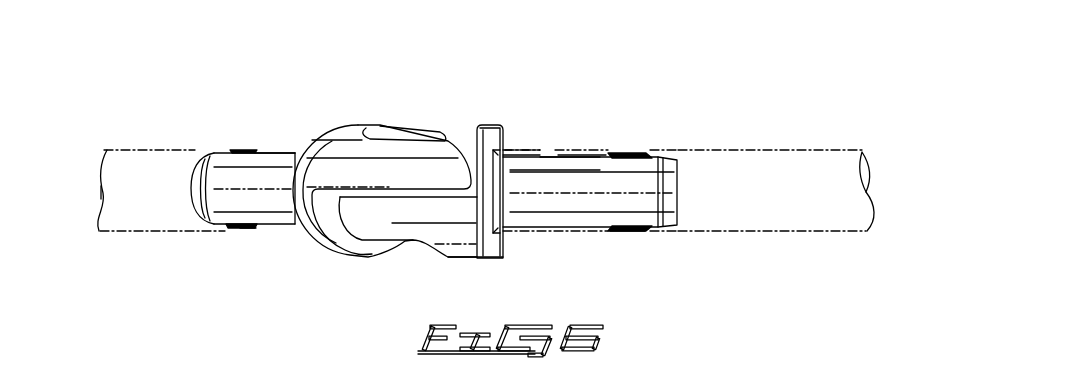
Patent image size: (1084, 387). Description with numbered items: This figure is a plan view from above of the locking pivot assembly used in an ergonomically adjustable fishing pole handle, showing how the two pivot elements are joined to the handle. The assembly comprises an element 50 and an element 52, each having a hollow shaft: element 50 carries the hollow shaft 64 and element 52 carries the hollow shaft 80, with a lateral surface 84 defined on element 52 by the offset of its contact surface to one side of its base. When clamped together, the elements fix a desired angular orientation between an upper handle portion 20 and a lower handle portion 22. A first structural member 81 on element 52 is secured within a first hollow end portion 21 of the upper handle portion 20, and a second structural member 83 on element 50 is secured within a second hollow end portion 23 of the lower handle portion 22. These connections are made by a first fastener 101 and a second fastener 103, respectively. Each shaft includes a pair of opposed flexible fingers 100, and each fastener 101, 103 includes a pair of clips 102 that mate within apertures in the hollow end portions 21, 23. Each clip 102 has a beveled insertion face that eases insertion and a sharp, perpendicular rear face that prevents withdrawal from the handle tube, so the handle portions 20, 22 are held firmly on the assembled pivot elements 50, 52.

The upper handle portion 20 is at (747, 150).
The first hollow end portion 21 is at (522, 148).
The lower handle portion 22 is at (121, 150).
The second hollow end portion 23 is at (295, 144).
The element 50 is at (329, 126).
The element 52 is at (474, 262).
The hollow shaft 64 is at (272, 152).
The hollow shaft 80 is at (548, 156).
The first structural member 81 is at (573, 149).
The second structural member 83 is at (262, 149).
The lateral surface 84 is at (475, 137).
The flexible fingers 100 is at (252, 233).
The first fastener 101 is at (641, 150).
The clip 102 is at (240, 233).
The second fastener 103 is at (234, 148).